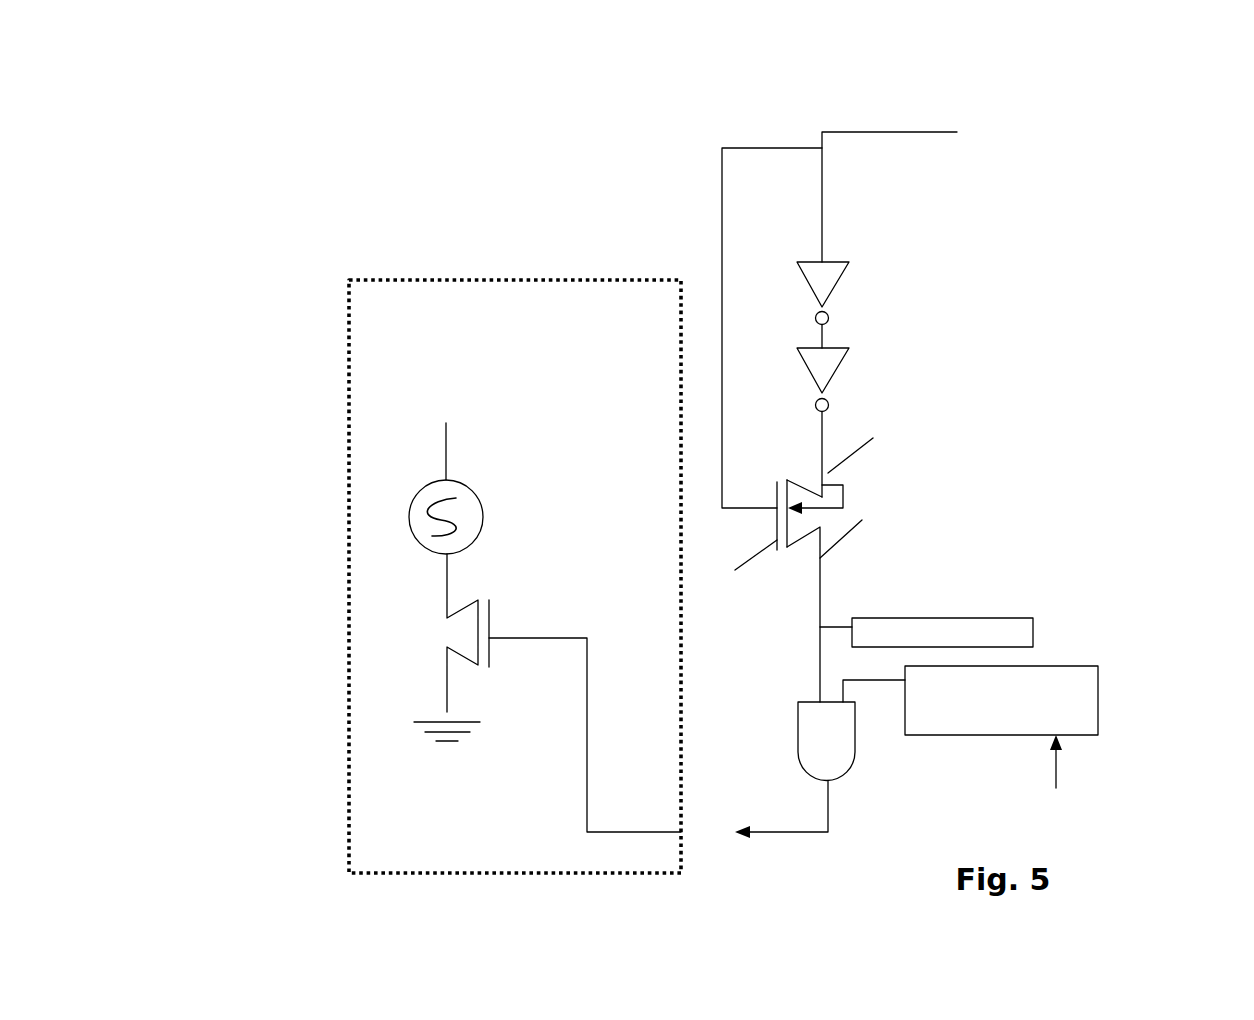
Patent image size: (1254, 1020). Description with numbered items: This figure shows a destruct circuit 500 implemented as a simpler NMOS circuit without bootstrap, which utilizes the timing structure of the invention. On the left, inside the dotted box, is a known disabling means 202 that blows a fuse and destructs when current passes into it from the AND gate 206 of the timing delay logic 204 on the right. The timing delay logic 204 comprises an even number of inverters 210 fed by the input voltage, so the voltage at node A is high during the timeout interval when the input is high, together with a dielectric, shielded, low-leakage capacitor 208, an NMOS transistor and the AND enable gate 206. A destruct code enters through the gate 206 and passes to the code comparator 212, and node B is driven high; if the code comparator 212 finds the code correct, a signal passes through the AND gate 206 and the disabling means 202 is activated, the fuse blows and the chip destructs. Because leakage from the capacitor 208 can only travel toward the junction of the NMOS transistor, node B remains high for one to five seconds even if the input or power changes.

The destruct circuit 500 is at (277, 162).
The disabling means 202 is at (503, 280).
The timing delay logic 204 is at (688, 124).
The AND gate 206 is at (855, 762).
The capacitor 208 is at (1033, 630).
The inverters 210 is at (838, 283).
The code comparator 212 is at (1098, 690).